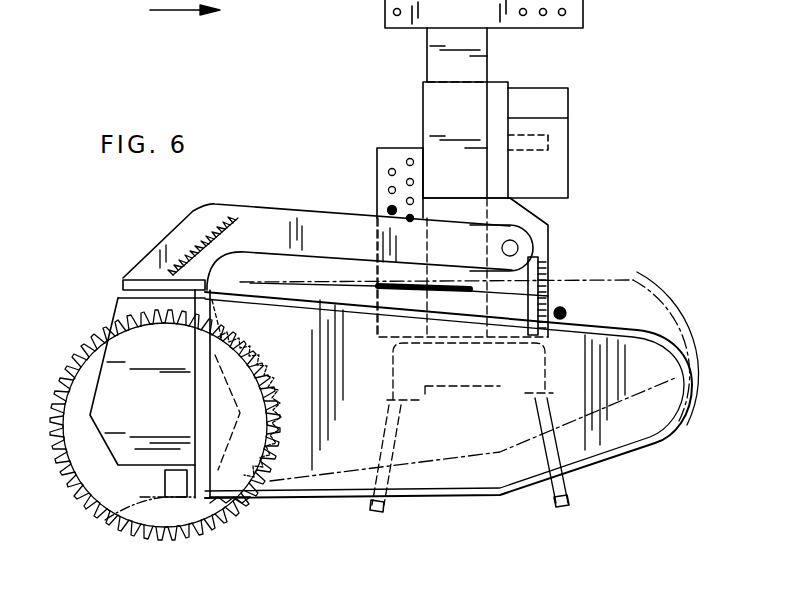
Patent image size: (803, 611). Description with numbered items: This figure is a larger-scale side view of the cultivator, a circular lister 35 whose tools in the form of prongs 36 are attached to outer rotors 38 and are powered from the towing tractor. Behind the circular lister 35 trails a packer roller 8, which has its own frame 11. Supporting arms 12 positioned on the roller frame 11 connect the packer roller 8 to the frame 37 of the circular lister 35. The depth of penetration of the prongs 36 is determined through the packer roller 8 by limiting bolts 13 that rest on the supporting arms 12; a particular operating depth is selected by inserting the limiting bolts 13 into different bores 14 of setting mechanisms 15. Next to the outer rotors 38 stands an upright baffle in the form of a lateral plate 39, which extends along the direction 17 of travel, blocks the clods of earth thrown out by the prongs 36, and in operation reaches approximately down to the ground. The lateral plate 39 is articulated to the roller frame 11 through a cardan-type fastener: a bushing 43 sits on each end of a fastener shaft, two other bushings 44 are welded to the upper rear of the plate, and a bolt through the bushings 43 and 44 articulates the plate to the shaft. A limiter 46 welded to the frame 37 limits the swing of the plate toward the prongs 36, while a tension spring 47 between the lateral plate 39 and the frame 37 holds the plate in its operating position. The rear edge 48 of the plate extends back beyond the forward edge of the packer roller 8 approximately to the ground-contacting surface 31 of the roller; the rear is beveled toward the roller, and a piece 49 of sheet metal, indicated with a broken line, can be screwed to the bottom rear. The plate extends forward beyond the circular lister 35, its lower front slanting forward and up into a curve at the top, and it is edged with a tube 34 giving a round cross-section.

The packer roller 8 is at (92, 348).
The frame 11 is at (120, 292).
The supporting arms 12 is at (283, 214).
The limiting bolts 13 is at (388, 210).
The bores 14 is at (410, 160).
The setting mechanisms 15 is at (390, 173).
The direction of travel 17 is at (166, 12).
The surface of the roller 31 is at (233, 497).
The tube 34 is at (653, 450).
The circular lister 35 is at (533, 216).
The prongs 36 is at (560, 500).
The frame 37 is at (548, 251).
The outer rotors 38 is at (500, 383).
The lateral plates 39 is at (668, 412).
The bushing 43 is at (220, 325).
The bushings 44 is at (265, 368).
The limiter 46 is at (548, 299).
The tension spring 47 is at (562, 322).
The rear edge 48 is at (203, 485).
The piece of sheet metal 49 is at (140, 503).